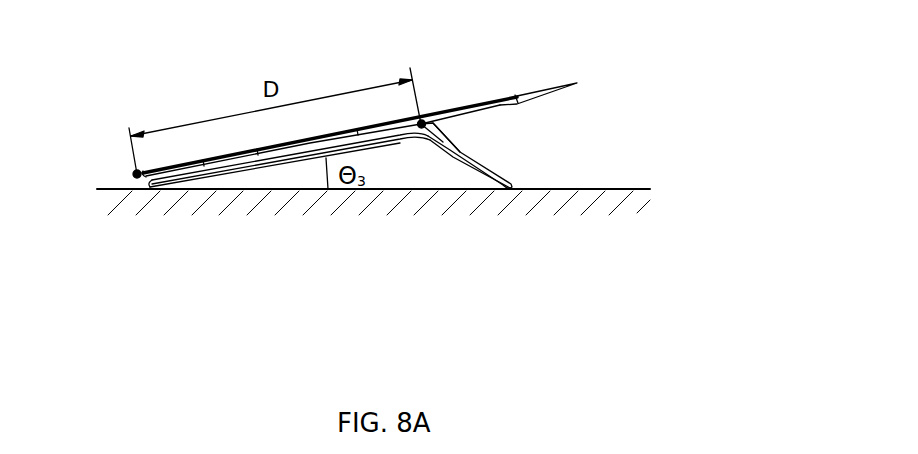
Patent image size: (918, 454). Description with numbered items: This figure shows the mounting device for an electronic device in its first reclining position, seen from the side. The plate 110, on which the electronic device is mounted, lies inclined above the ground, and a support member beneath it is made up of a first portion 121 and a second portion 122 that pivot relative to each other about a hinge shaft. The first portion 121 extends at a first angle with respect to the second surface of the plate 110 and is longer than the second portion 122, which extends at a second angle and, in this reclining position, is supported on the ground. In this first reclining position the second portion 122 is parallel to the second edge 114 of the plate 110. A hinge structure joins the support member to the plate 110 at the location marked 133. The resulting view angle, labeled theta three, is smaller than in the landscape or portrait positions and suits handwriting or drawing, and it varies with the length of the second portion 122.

The plate 110 is at (503, 95).
The second pair of edges 114 is at (134, 174).
The first portion 121 is at (275, 165).
The second portion 122 is at (494, 170).
The hinge 133 is at (423, 121).